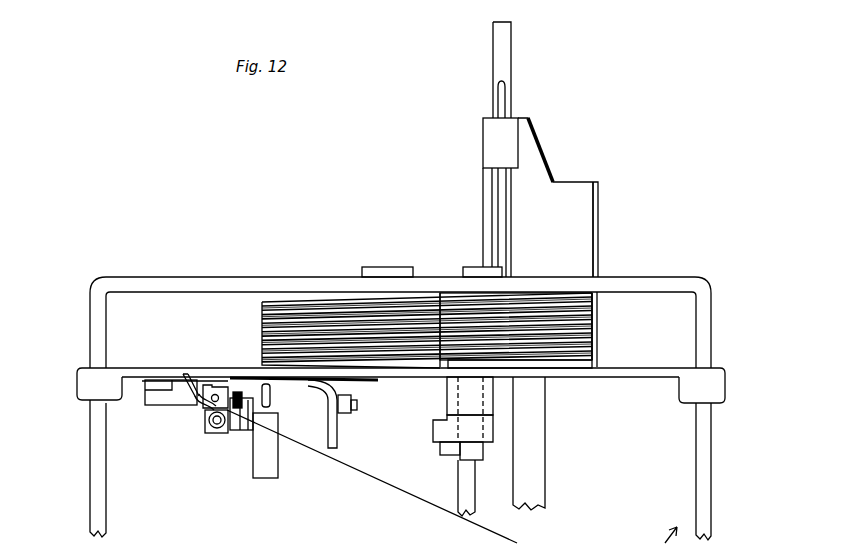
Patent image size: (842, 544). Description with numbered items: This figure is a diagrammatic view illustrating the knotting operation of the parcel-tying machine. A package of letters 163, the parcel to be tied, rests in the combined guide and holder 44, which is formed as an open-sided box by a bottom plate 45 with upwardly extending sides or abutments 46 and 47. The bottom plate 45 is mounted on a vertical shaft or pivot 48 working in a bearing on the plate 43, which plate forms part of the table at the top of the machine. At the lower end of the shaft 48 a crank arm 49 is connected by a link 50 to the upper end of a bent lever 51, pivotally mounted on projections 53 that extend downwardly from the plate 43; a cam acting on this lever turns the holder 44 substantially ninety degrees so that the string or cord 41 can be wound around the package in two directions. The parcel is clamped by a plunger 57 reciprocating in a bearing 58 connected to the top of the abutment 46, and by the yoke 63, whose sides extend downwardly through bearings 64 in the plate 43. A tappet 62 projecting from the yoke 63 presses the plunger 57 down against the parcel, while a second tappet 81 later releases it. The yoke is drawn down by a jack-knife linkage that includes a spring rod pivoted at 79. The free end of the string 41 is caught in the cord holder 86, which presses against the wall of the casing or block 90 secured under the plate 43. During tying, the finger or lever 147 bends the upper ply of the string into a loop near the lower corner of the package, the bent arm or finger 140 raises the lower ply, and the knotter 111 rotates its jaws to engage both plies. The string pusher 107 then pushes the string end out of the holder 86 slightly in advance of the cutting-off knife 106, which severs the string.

The string or cord 41 is at (425, 298).
The plate 43 is at (135, 368).
The combined guide and holder 44 is at (577, 218).
The bottom plate 45 is at (582, 363).
The side or abutment 46 is at (535, 173).
The side or abutment 47 is at (597, 245).
The vertical shaft or pivot 48 is at (447, 392).
The crank arm 49 is at (433, 432).
The link 50 is at (440, 452).
The bent lever 51 is at (468, 492).
The projections 53 is at (538, 468).
The plunger 57 is at (513, 80).
The bearing 58 is at (483, 145).
The tappet 62 is at (471, 265).
The yoke 63 is at (663, 281).
The bearings 64 is at (80, 385).
The pivot 79 is at (193, 395).
The second tappet 81 is at (381, 265).
The cord holder 86 is at (199, 410).
The casing or block 90 is at (210, 430).
The cutting-off knife 106 is at (237, 393).
The string pusher 107 is at (243, 427).
The knotter 111 is at (272, 400).
The bent arm or finger 140 is at (313, 392).
The finger or lever 147 is at (195, 378).
The package of letters 163 is at (258, 325).